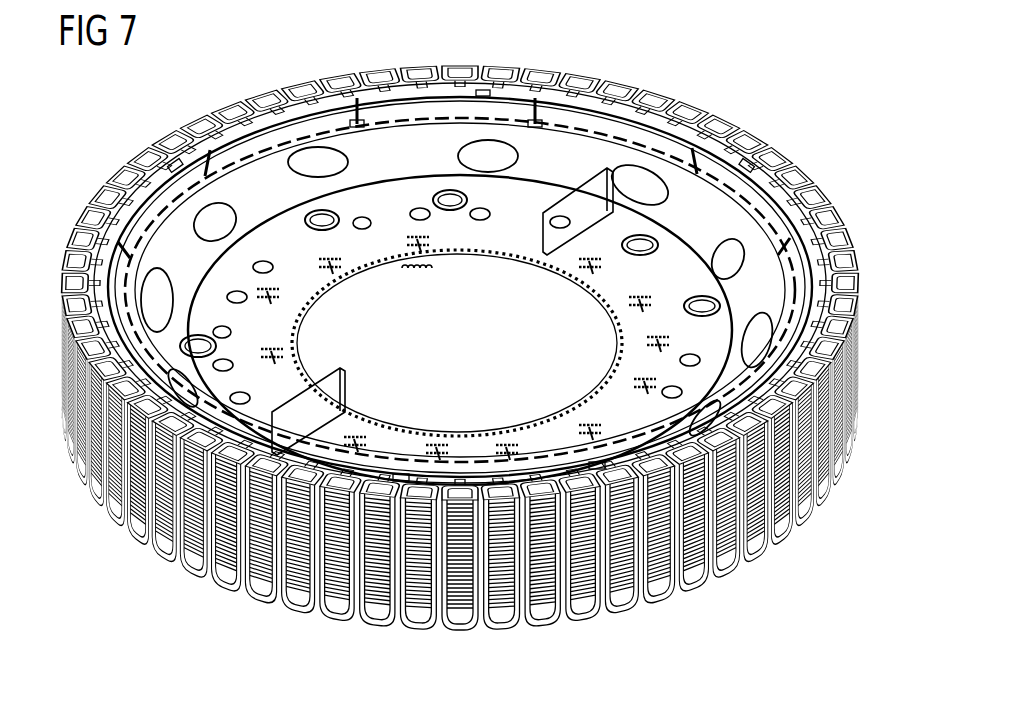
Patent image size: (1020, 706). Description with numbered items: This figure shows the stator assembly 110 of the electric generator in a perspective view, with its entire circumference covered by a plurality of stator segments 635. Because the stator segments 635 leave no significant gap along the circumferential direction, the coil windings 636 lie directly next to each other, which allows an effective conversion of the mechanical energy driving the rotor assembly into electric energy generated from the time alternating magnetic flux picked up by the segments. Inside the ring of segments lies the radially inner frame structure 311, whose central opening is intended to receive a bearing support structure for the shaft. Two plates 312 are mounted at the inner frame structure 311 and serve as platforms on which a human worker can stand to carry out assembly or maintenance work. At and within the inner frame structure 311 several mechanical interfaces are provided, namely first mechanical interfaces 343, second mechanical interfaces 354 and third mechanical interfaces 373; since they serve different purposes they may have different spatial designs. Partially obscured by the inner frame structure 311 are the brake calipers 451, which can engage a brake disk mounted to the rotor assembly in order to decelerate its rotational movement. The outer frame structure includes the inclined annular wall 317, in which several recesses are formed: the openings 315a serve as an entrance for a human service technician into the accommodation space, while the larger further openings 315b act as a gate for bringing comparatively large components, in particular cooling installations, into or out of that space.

The stator assembly 110 is at (467, 328).
The inner frame structure 311 is at (600, 398).
The plates 312 is at (546, 252).
The openings 315a is at (505, 152).
The further openings 315b is at (350, 152).
The inclined annular wall 317 is at (426, 146).
The first mechanical interfaces 343 is at (206, 335).
The second mechanical interfaces 354 is at (500, 437).
The third mechanical interfaces 373 is at (315, 250).
The brake calipers 451 is at (418, 272).
The stator segments 635 is at (806, 532).
The coil windings 636 is at (696, 108).